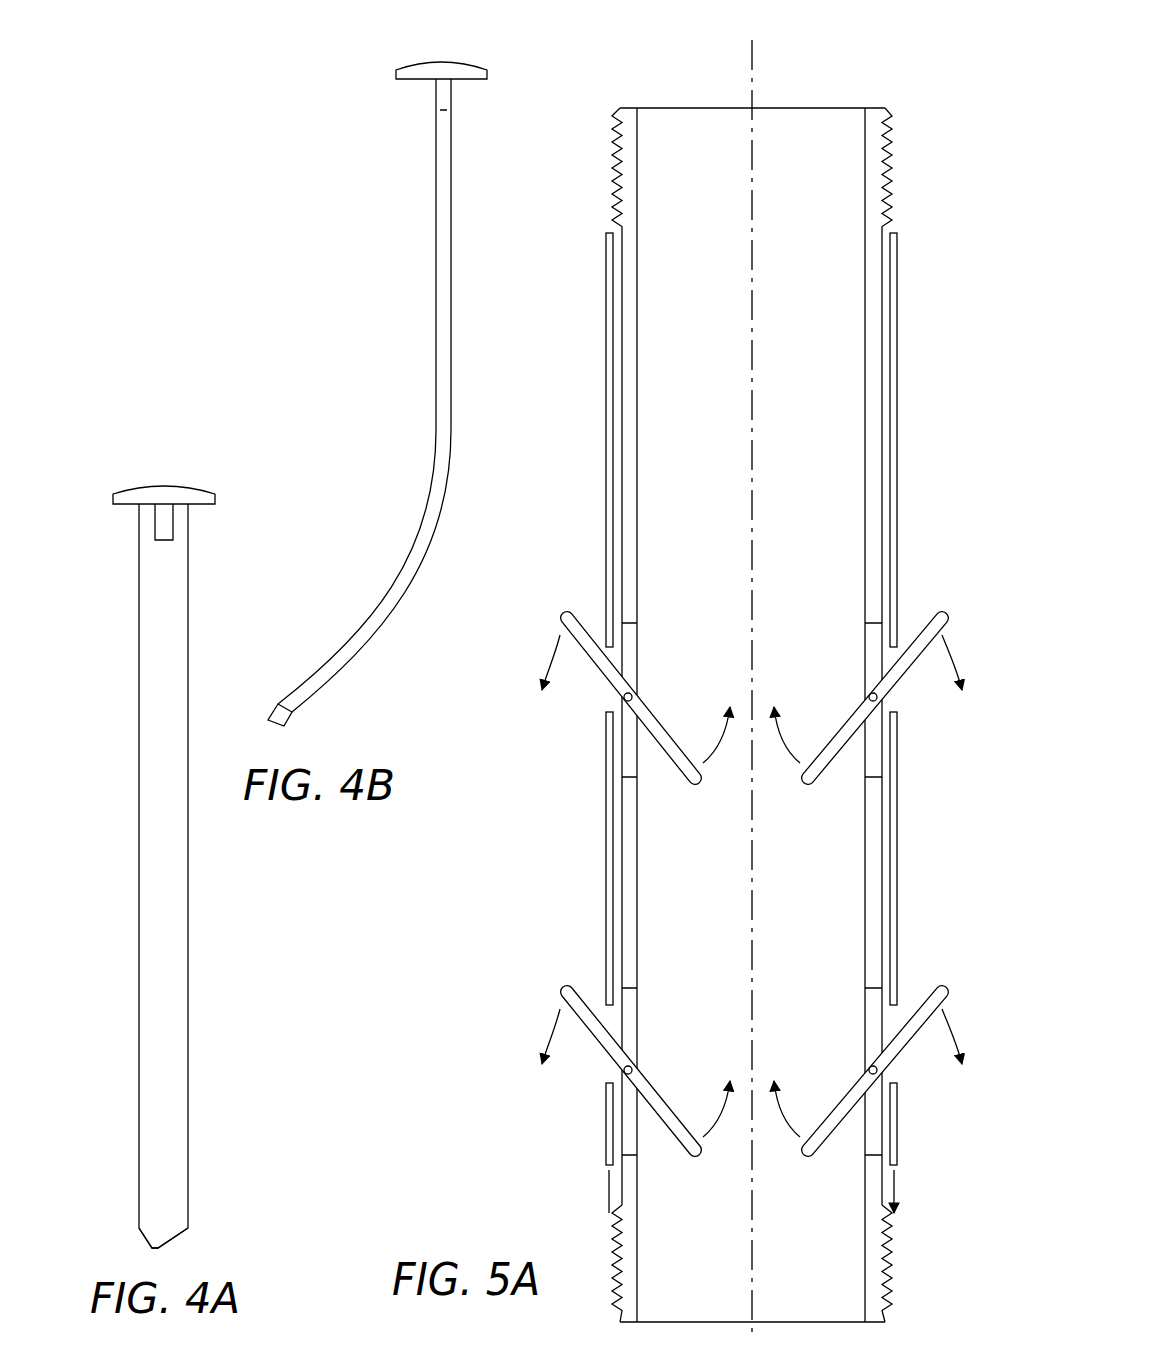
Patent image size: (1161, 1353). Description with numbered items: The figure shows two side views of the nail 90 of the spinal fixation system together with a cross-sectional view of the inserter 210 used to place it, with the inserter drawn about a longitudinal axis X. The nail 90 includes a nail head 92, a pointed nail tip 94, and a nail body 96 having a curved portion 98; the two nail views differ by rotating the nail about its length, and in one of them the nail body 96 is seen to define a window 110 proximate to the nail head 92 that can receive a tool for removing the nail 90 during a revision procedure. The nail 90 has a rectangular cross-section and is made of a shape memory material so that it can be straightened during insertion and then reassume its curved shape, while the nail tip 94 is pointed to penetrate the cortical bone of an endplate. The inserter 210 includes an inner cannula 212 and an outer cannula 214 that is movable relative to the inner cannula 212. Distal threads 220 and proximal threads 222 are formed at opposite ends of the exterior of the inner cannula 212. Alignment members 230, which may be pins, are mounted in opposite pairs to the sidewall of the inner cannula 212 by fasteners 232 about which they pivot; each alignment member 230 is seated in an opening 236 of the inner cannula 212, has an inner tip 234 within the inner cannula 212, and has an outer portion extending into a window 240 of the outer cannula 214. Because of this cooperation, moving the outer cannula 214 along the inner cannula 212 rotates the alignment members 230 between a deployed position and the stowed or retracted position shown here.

In FIG. 4A, the nail 90 is at (135, 819).
In FIG. 4B, the nail 90 is at (399, 366).
In FIG. 4A, the nail head 92 is at (140, 486).
In FIG. 4B, the nail head 92 is at (465, 62).
In FIG. 4A, the nail tip 94 is at (150, 1250).
In FIG. 4B, the nail tip 94 is at (268, 718).
In FIG. 4A, the nail body 96 is at (139, 935).
In FIG. 4B, the nail body 96 is at (436, 255).
In FIG. 4B, the curved portion 98 is at (400, 587).
In FIG. 4A, the window 110 is at (160, 530).
In FIG. 5A, the inserter 210 is at (740, 686).
In FIG. 5A, the inner cannula 212 is at (630, 108).
In FIG. 5A, the outer cannula 214 is at (607, 235).
In FIG. 5A, the distal threads 220 is at (885, 1273).
In FIG. 5A, the proximal threads 222 is at (888, 165).
In FIG. 5A, the alignment members 230 is at (563, 617).
In FIG. 5A, the fastener 232 is at (868, 695).
In FIG. 5A, the inner tip 234 is at (697, 782).
In FIG. 5A, the openings 236 is at (882, 638).
In FIG. 5A, the windows 240 is at (612, 712).
In FIG. 5A, the longitudinal axis X is at (752, 55).